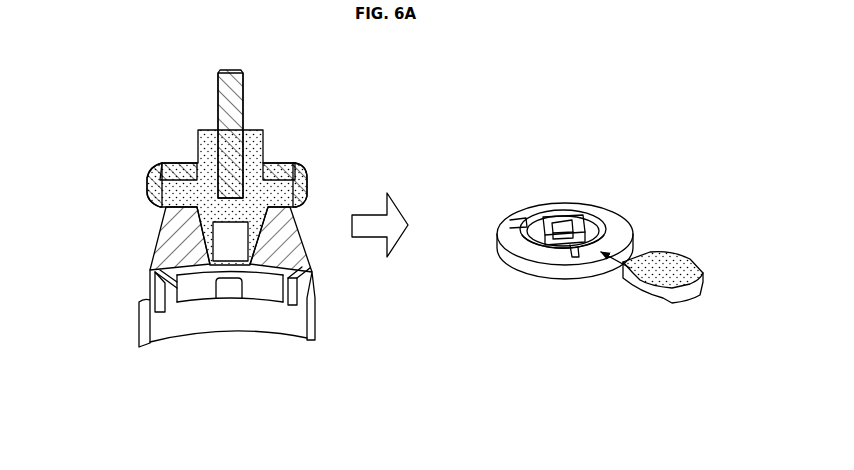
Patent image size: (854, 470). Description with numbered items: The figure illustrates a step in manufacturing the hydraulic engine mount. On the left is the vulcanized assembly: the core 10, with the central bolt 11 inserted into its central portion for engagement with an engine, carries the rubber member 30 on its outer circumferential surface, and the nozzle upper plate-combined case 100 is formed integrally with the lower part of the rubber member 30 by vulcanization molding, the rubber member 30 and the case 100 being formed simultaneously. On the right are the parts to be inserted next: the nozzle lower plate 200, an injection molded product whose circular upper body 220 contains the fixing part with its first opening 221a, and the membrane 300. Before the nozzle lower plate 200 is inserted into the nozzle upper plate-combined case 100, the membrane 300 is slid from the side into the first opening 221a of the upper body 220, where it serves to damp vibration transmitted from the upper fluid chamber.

The core 10 is at (263, 137).
The central bolt 11 is at (241, 86).
The rubber member 30 is at (172, 254).
The nozzle upper plate-combined case 100 is at (142, 324).
The nozzle lower plate 200 is at (598, 199).
The upper body 220 is at (565, 198).
The first opening 221a is at (600, 240).
The membrane 300 is at (662, 264).